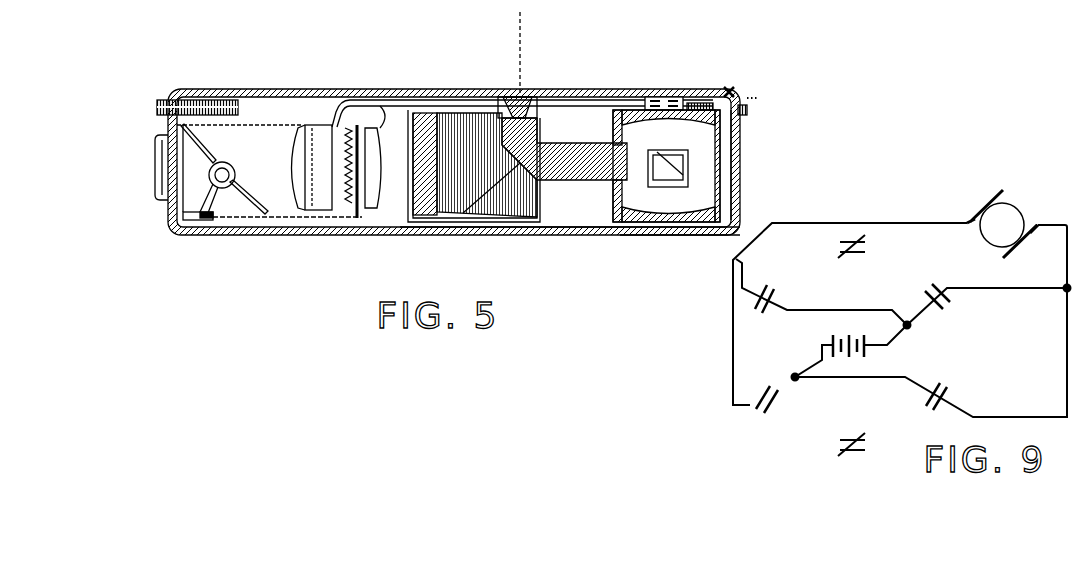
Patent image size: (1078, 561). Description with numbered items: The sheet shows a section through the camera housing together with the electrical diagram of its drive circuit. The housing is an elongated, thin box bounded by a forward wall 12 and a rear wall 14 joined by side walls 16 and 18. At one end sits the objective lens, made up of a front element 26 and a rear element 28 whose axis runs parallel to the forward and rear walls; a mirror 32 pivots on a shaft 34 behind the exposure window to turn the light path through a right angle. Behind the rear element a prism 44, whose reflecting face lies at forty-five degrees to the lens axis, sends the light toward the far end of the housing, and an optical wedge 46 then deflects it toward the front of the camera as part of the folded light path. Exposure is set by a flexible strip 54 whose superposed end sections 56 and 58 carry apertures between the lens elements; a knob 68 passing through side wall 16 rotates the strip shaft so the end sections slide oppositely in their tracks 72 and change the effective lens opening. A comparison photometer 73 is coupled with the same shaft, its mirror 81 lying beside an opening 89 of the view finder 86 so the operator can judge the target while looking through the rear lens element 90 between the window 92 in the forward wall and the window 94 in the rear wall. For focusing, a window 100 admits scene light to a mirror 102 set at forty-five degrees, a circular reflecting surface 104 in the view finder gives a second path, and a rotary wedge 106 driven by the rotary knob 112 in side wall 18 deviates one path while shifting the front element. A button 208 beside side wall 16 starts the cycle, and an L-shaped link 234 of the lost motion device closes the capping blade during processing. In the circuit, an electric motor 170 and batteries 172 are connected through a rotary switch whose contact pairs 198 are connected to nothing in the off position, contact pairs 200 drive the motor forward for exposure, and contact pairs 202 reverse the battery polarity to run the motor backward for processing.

In FIG. 5, the forward wall 12 is at (573, 89).
In FIG. 5, the rear wall 14 is at (573, 231).
In FIG. 5, the side wall 16 is at (177, 124).
In FIG. 5, the side wall 18 is at (741, 152).
In FIG. 5, the front element 26 is at (297, 218).
In FIG. 5, the rear element 28 is at (370, 100).
In FIG. 5, the mirror 32 is at (208, 152).
In FIG. 5, the shaft 34 is at (213, 172).
In FIG. 5, the prism 44 is at (458, 108).
In FIG. 5, the optical wedge 46 is at (408, 110).
In FIG. 5, the flexible strip 54 is at (264, 145).
In FIG. 5, the end section 56 is at (347, 200).
In FIG. 5, the end section 58 is at (372, 210).
In FIG. 5, the knob 68 is at (157, 106).
In FIG. 5, the tracks 72 is at (335, 120).
In FIG. 5, the comparison photometer 73 is at (686, 100).
In FIG. 5, the mirror 81 is at (668, 178).
In FIG. 5, the view finder 86 is at (735, 87).
In FIG. 5, the opening 89 is at (690, 153).
In FIG. 5, the rear lens element 90 is at (693, 207).
In FIG. 5, the window 92 is at (637, 96).
In FIG. 5, the window 94 is at (647, 238).
In FIG. 5, the window 100 is at (513, 100).
In FIG. 5, the mirror 102 is at (463, 213).
In FIG. 5, the circular reflecting surface 104 is at (688, 161).
In FIG. 5, the rotary wedge 106 is at (528, 115).
In FIG. 5, the rotary knob 112 is at (749, 110).
In FIG. 9, the electric motor 170 is at (1018, 205).
In FIG. 9, the batteries 172 is at (862, 362).
In FIG. 9, the pairs of contacts 198 is at (835, 247).
In FIG. 9, the pairs of contacts 200 is at (757, 319).
In FIG. 9, the pairs of contacts 202 is at (957, 300).
In FIG. 5, the button 208 is at (158, 168).
In FIG. 5, the L-shaped link 234 is at (248, 297).